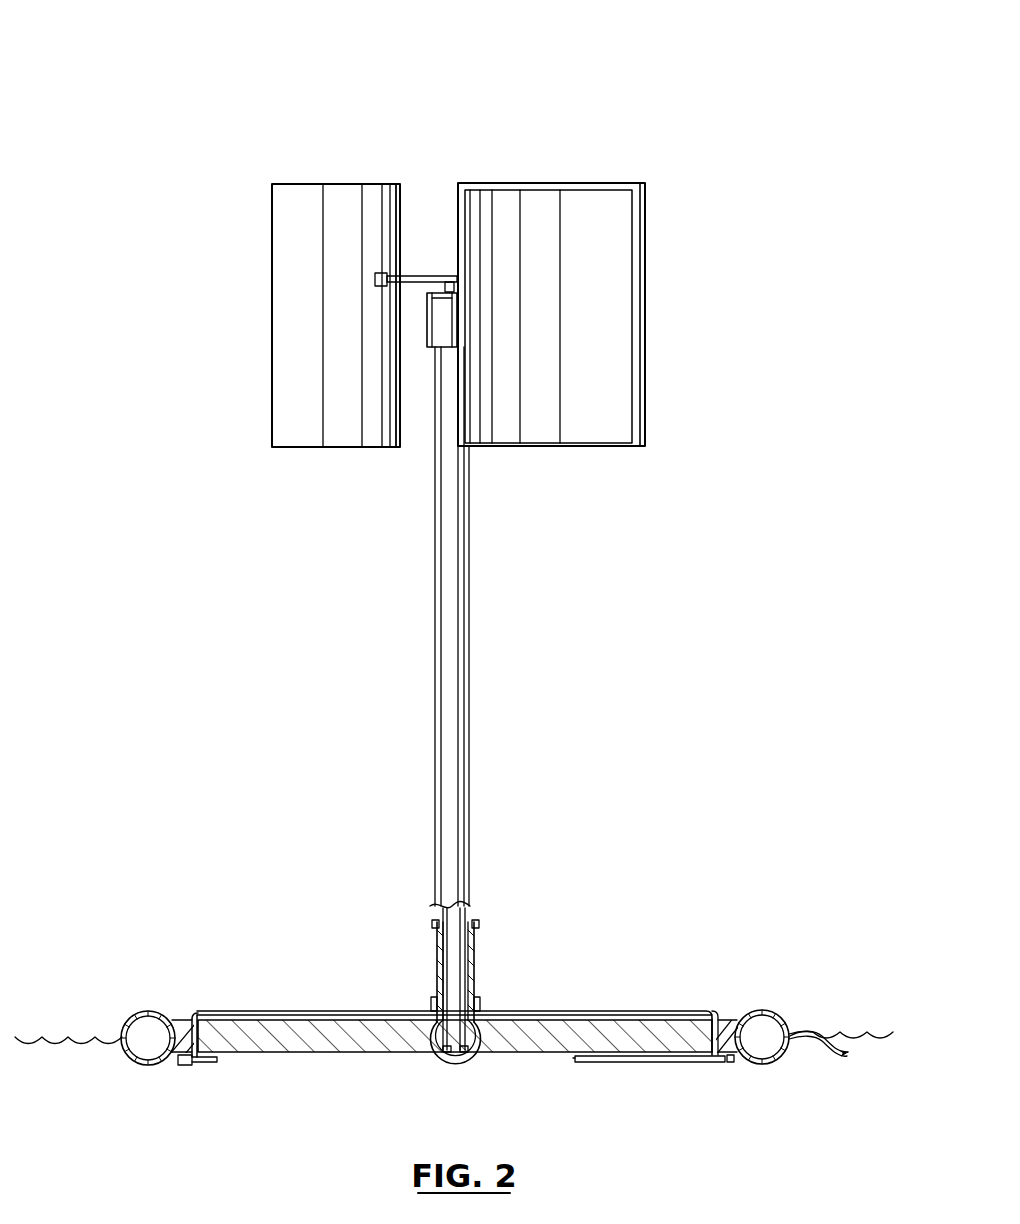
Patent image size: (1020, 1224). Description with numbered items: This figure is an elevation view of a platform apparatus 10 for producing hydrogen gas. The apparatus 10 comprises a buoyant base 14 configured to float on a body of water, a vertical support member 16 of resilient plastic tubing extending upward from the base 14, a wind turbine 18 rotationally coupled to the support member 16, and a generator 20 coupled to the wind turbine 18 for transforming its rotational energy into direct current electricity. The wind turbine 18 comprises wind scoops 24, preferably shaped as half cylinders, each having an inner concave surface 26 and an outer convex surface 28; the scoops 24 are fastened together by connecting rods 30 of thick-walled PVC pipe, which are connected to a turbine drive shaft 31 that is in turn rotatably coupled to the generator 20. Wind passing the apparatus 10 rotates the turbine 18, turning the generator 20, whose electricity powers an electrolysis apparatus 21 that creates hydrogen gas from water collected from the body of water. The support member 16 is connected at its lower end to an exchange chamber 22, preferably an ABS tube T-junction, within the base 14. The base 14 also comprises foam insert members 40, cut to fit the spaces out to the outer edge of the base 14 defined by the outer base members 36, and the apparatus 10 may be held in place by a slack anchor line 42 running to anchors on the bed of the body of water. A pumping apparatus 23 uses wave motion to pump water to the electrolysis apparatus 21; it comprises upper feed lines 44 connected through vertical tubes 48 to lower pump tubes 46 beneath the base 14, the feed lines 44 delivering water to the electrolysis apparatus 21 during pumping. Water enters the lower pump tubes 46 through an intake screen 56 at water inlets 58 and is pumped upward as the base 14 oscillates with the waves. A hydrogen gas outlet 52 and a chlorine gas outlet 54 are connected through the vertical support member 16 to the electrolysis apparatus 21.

The platform apparatus 10 is at (200, 108).
The buoyant base 14 is at (338, 1080).
The support member 16 is at (457, 497).
The wind turbine 18 is at (503, 87).
The generator 20 is at (441, 292).
The electrolysis apparatus 21 is at (420, 972).
The exchange chamber 22 is at (437, 1005).
The pumping apparatus 23 is at (200, 987).
The wind scoops 24 is at (302, 185).
The inner concave surface 26 is at (547, 377).
The outer convex surface 28 is at (335, 333).
The connecting rods 30 is at (423, 276).
The turbine drive shaft 31 is at (457, 287).
The outer base members 36 is at (148, 1005).
The foam insert members 40 is at (607, 1025).
The anchor line 42 is at (830, 1020).
The upper feed lines 44 is at (658, 1015).
The lower pump tubes 46 is at (597, 1062).
The vertical tubes 48 is at (733, 1018).
The hydrogen gas outlet 52 is at (433, 922).
The chlorine gas outlet 54 is at (475, 923).
The intake screen 56 is at (180, 1060).
The water inlets 58 is at (168, 1067).